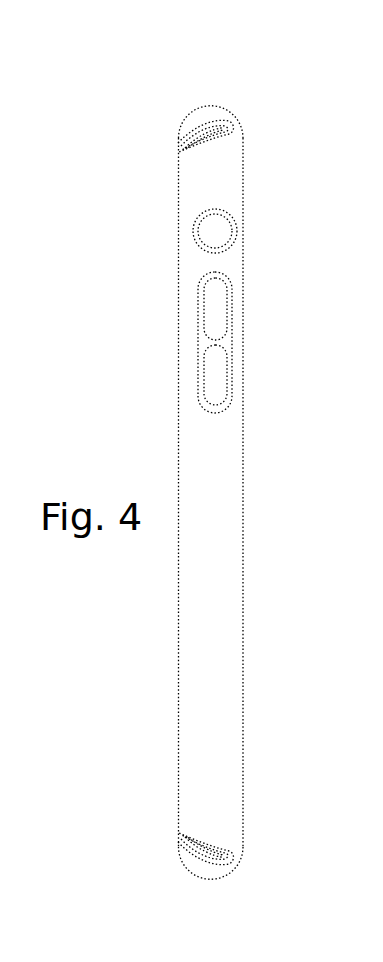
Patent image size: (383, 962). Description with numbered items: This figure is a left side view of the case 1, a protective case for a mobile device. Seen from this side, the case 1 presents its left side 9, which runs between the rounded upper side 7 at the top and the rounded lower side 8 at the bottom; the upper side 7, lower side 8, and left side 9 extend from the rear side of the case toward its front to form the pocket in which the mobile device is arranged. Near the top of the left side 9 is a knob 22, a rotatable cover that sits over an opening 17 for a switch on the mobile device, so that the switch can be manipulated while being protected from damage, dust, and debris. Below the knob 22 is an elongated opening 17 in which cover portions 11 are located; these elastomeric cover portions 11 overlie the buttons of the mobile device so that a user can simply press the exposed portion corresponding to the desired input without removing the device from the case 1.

The case 1 is at (160, 597).
The upper side 7 is at (228, 110).
The lower side 8 is at (236, 870).
The left side 9 is at (215, 673).
The knob 22 is at (213, 233).
The opening 17 is at (200, 245).
The cover portion 11 is at (212, 318).